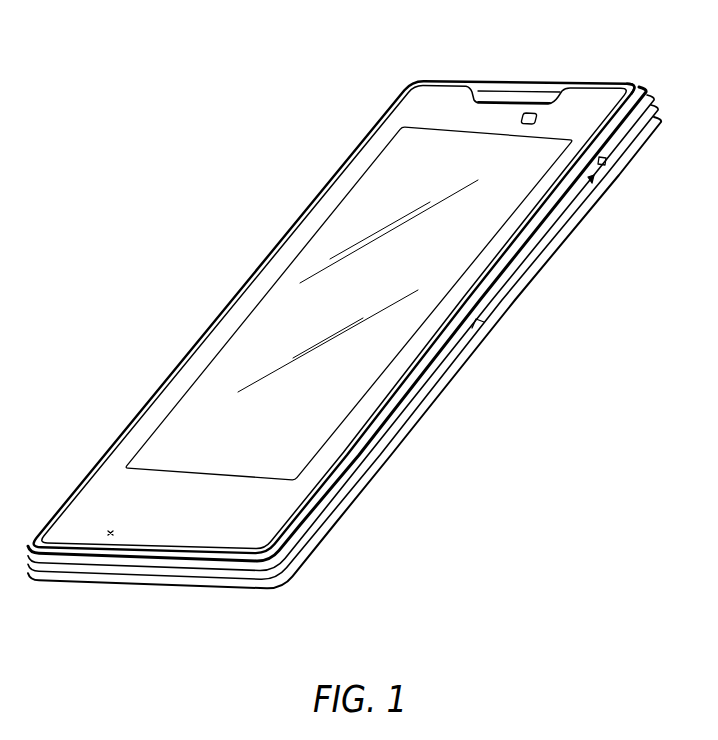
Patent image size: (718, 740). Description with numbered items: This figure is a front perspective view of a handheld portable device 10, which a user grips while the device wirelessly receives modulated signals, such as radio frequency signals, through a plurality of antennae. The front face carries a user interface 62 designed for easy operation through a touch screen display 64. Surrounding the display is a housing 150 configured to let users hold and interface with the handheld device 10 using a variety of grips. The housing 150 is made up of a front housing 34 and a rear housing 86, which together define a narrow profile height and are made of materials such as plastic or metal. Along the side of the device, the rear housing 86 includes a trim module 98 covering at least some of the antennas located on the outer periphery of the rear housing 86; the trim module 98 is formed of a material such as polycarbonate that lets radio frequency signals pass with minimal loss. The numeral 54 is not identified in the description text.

The handheld portable device 10 is at (354, 308).
The front housing 34 is at (640, 85).
The housing 54 is at (640, 173).
The user interface 62 is at (258, 329).
The touch screen display 64 is at (295, 284).
The rear housing 86 is at (655, 108).
The trim module 98 is at (612, 181).
The housing 150 is at (637, 69).